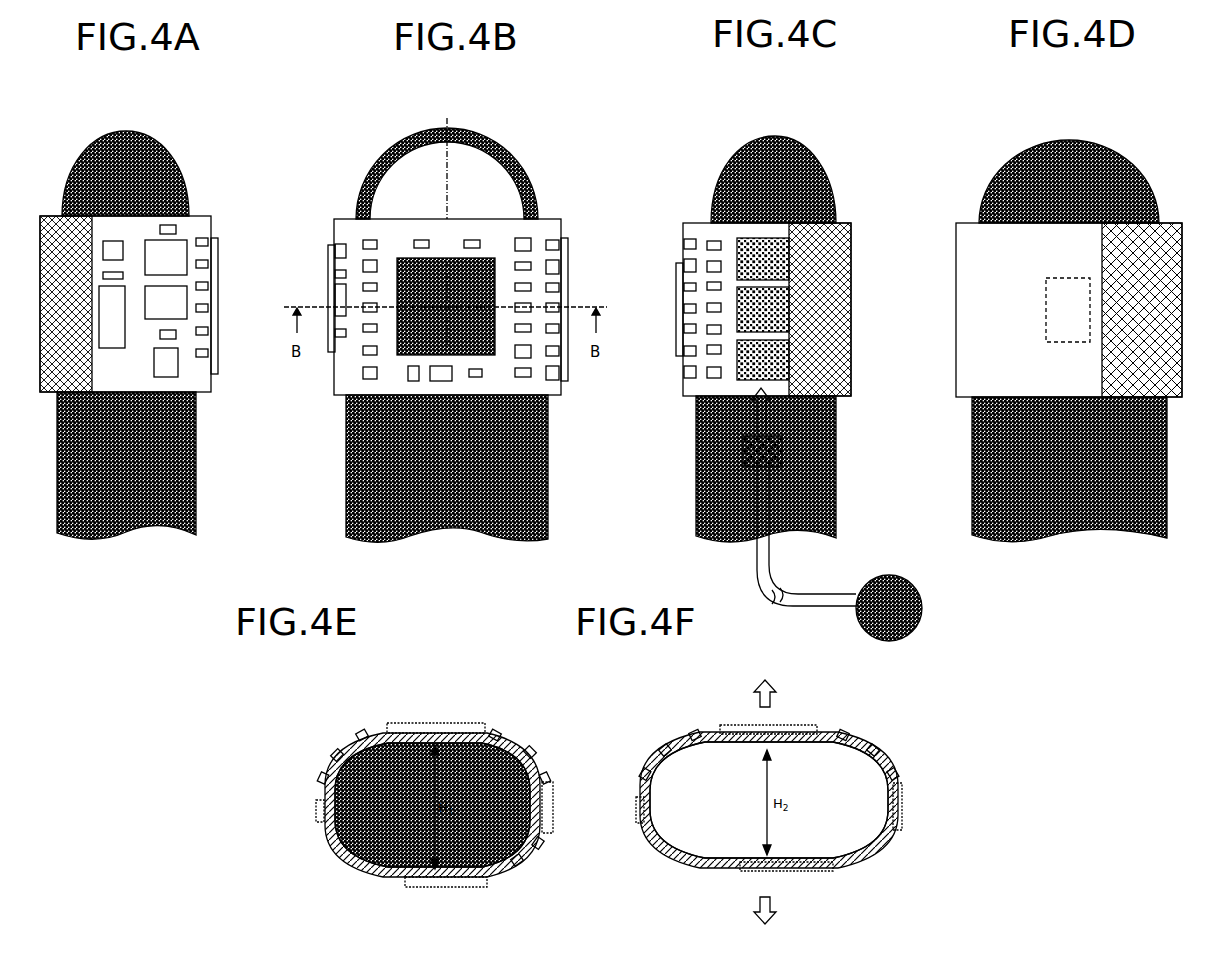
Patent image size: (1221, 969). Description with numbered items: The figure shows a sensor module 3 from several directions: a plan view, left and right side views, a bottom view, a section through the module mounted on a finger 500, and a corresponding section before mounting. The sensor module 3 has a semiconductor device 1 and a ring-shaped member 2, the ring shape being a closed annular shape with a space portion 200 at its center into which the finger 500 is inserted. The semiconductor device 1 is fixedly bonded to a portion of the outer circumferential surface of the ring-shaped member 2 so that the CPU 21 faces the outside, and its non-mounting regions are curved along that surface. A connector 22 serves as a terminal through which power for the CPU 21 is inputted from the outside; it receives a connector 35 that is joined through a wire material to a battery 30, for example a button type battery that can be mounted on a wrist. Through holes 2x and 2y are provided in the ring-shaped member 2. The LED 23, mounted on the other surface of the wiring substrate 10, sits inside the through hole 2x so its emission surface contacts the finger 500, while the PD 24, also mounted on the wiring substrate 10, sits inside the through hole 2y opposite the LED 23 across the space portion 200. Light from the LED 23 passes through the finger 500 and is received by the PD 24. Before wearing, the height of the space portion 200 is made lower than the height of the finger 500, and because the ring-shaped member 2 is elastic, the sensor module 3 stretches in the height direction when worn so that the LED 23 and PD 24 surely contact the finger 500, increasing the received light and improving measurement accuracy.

In FIG. 4A, the semiconductor device 1 is at (112, 208).
In FIG. 4B, the semiconductor device 1 is at (338, 212).
In FIG. 4C, the semiconductor device 1 is at (692, 216).
In FIG. 4D, the semiconductor device 1 is at (1092, 212).
In FIG. 4E, the semiconductor device 1 is at (550, 858).
In FIG. 4F, the semiconductor device 1 is at (886, 854).
In FIG. 4A, the ring-shaped member 2 is at (62, 208).
In FIG. 4D, the ring-shaped member 2 is at (1153, 205).
In FIG. 4E, the ring-shaped member 2 is at (520, 868).
In FIG. 4F, the ring-shaped member 2 is at (850, 860).
In FIG. 4A, the sensor module 3 is at (70, 148).
In FIG. 4D, the sensor module 3 is at (1177, 156).
In FIG. 4E, the sensor module 3 is at (578, 912).
In FIG. 4F, the sensor module 3 is at (913, 912).
In FIG. 4E, the through hole 2x is at (445, 738).
In FIG. 4F, the through hole 2x is at (780, 738).
In FIG. 4E, the through hole 2y is at (455, 872).
In FIG. 4F, the through hole 2y is at (785, 872).
In FIG. 4A, the wiring substrate 10 is at (200, 218).
In FIG. 4B, the wiring substrate 10 is at (390, 230).
In FIG. 4C, the wiring substrate 10 is at (842, 226).
In FIG. 4D, the wiring substrate 10 is at (975, 228).
In FIG. 4E, the wiring substrate 10 is at (545, 840).
In FIG. 4F, the wiring substrate 10 is at (890, 838).
In FIG. 4A, the CPU 21 is at (219, 300).
In FIG. 4B, the CPU 21 is at (486, 258).
In FIG. 4C, the CPU 21 is at (676, 310).
In FIG. 4E, the CPU 21 is at (480, 733).
In FIG. 4F, the CPU 21 is at (812, 733).
In FIG. 4B, the connector 22 is at (568, 375).
In FIG. 4C, the connector 22 is at (792, 357).
In FIG. 4E, the connector 22 is at (555, 805).
In FIG. 4F, the connector 22 is at (902, 805).
In FIG. 4B, the LED 23 is at (447, 224).
In FIG. 4E, the LED 23 is at (435, 738).
In FIG. 4F, the LED 23 is at (760, 738).
In FIG. 4D, the PD 24 is at (1003, 192).
In FIG. 4E, the PD 24 is at (432, 870).
In FIG. 4F, the PD 24 is at (762, 870).
In FIG. 4C, the battery 30 is at (880, 576).
In FIG. 4C, the connector 35 is at (784, 452).
In FIG. 4F, the space portion 200 is at (718, 830).
In FIG. 4A, the finger 500 is at (138, 133).
In FIG. 4B, the finger 500 is at (533, 186).
In FIG. 4C, the finger 500 is at (780, 136).
In FIG. 4D, the finger 500 is at (1072, 141).
In FIG. 4E, the finger 500 is at (390, 865).